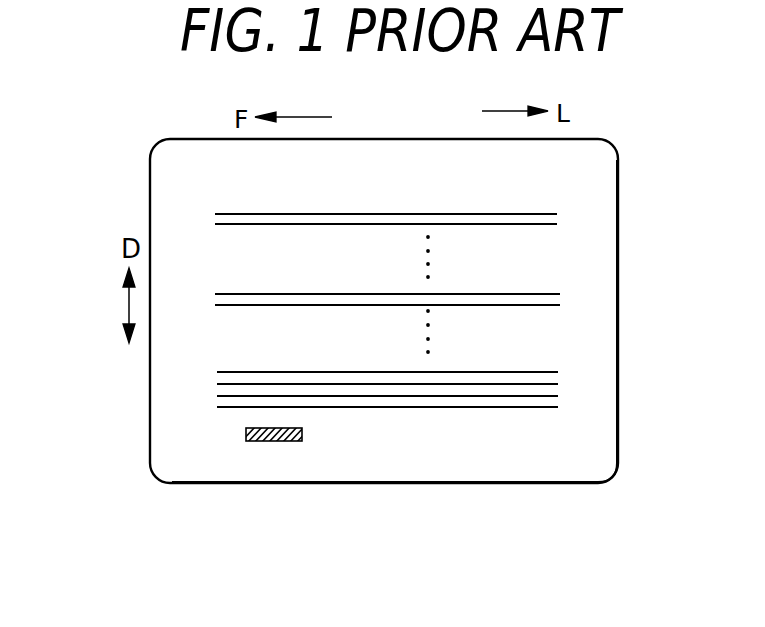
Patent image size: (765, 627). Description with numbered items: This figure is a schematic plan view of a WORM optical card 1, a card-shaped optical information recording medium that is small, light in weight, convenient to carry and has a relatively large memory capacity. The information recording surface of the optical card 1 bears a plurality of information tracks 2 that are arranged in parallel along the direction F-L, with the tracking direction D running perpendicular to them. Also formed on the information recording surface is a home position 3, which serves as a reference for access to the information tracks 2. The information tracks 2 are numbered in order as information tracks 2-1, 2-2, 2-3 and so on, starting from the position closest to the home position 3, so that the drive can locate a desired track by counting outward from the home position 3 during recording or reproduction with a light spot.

The optical card 1 is at (618, 187).
The information tracks 2 is at (523, 293).
The information track 2-1 is at (228, 408).
The information track 2-2 is at (220, 396).
The information track 2-3 is at (218, 384).
The home position 3 is at (282, 441).